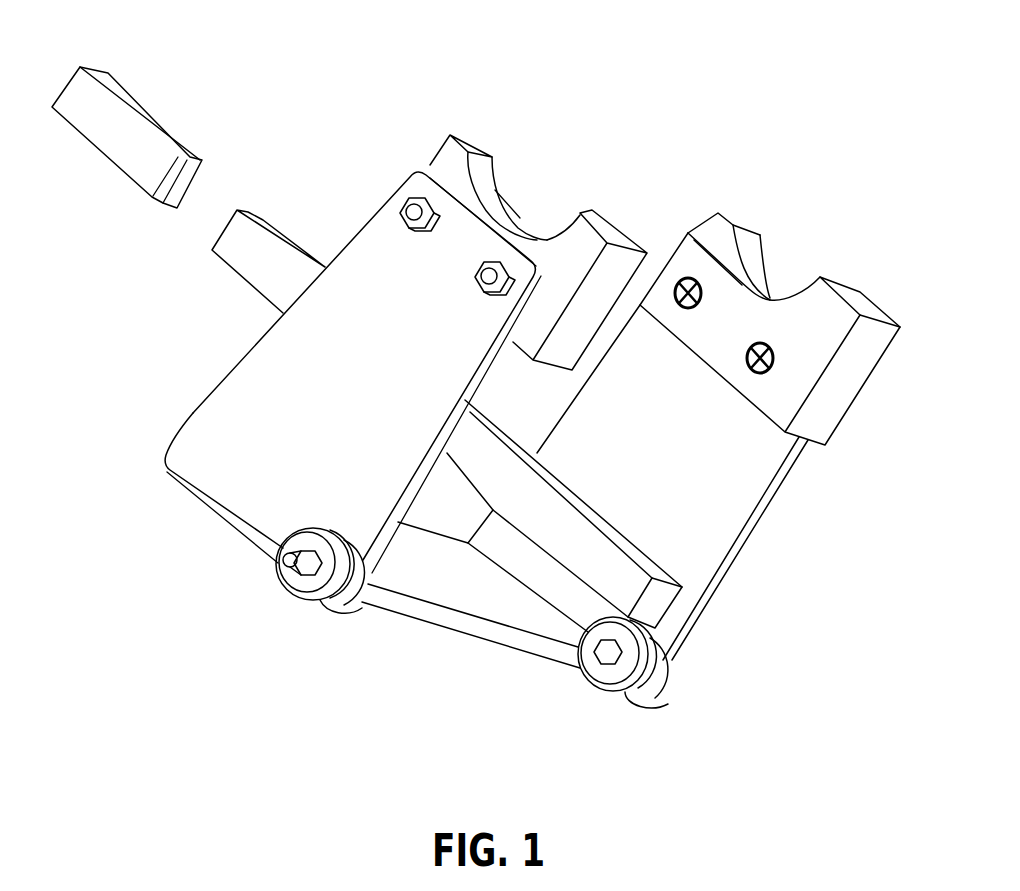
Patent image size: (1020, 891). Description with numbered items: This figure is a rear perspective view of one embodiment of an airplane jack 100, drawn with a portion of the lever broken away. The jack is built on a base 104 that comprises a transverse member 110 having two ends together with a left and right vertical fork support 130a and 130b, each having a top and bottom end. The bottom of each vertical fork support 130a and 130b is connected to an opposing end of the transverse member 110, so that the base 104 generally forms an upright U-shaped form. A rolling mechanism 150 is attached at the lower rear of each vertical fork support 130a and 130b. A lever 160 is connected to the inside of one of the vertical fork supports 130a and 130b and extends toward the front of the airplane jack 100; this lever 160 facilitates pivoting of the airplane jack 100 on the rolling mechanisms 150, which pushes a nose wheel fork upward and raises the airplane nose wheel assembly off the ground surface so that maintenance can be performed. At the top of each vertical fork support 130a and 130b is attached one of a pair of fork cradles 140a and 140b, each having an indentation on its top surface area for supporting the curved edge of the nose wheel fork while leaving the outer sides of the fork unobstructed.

The airplane jack 100 is at (357, 128).
The base 104 is at (770, 622).
The transverse member 110 is at (475, 627).
The vertical fork support 130a is at (742, 463).
The vertical fork support 130b is at (203, 440).
The fork cradle 140a is at (822, 310).
The fork cradle 140b is at (568, 240).
The rolling mechanism 150 is at (312, 600).
The lever 160 is at (237, 247).